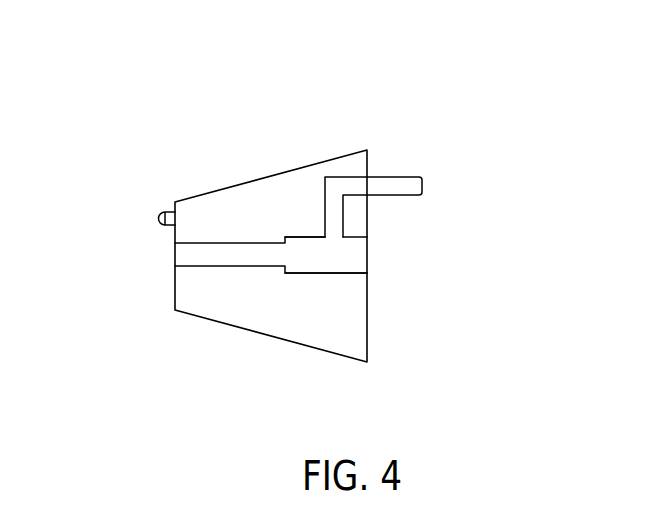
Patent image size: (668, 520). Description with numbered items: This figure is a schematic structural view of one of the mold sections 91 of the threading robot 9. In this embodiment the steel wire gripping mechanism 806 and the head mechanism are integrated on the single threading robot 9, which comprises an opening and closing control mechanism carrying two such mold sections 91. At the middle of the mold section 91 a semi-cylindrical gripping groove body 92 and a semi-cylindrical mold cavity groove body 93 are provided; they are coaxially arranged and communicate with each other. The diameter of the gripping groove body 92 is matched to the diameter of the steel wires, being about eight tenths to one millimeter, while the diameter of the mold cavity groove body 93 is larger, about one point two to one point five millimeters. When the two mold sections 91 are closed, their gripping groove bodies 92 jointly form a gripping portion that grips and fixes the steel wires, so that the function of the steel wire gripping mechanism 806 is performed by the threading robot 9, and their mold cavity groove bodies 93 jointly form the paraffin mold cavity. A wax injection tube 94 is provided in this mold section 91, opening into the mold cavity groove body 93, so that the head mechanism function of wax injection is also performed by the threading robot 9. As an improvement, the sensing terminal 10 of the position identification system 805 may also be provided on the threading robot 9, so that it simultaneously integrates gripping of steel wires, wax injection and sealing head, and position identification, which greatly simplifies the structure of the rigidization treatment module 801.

The sensing terminal 10 is at (157, 214).
The position identification system 805 is at (394, 148).
The mold section 91 is at (223, 207).
The threading robot 9 is at (402, 232).
The steel wire gripping mechanism 806 is at (402, 232).
The rigidization treatment module 801 is at (580, 77).
The gripping groove body 92 is at (232, 260).
The mold cavity groove body 93 is at (345, 260).
The wax injection tube 94 is at (385, 187).